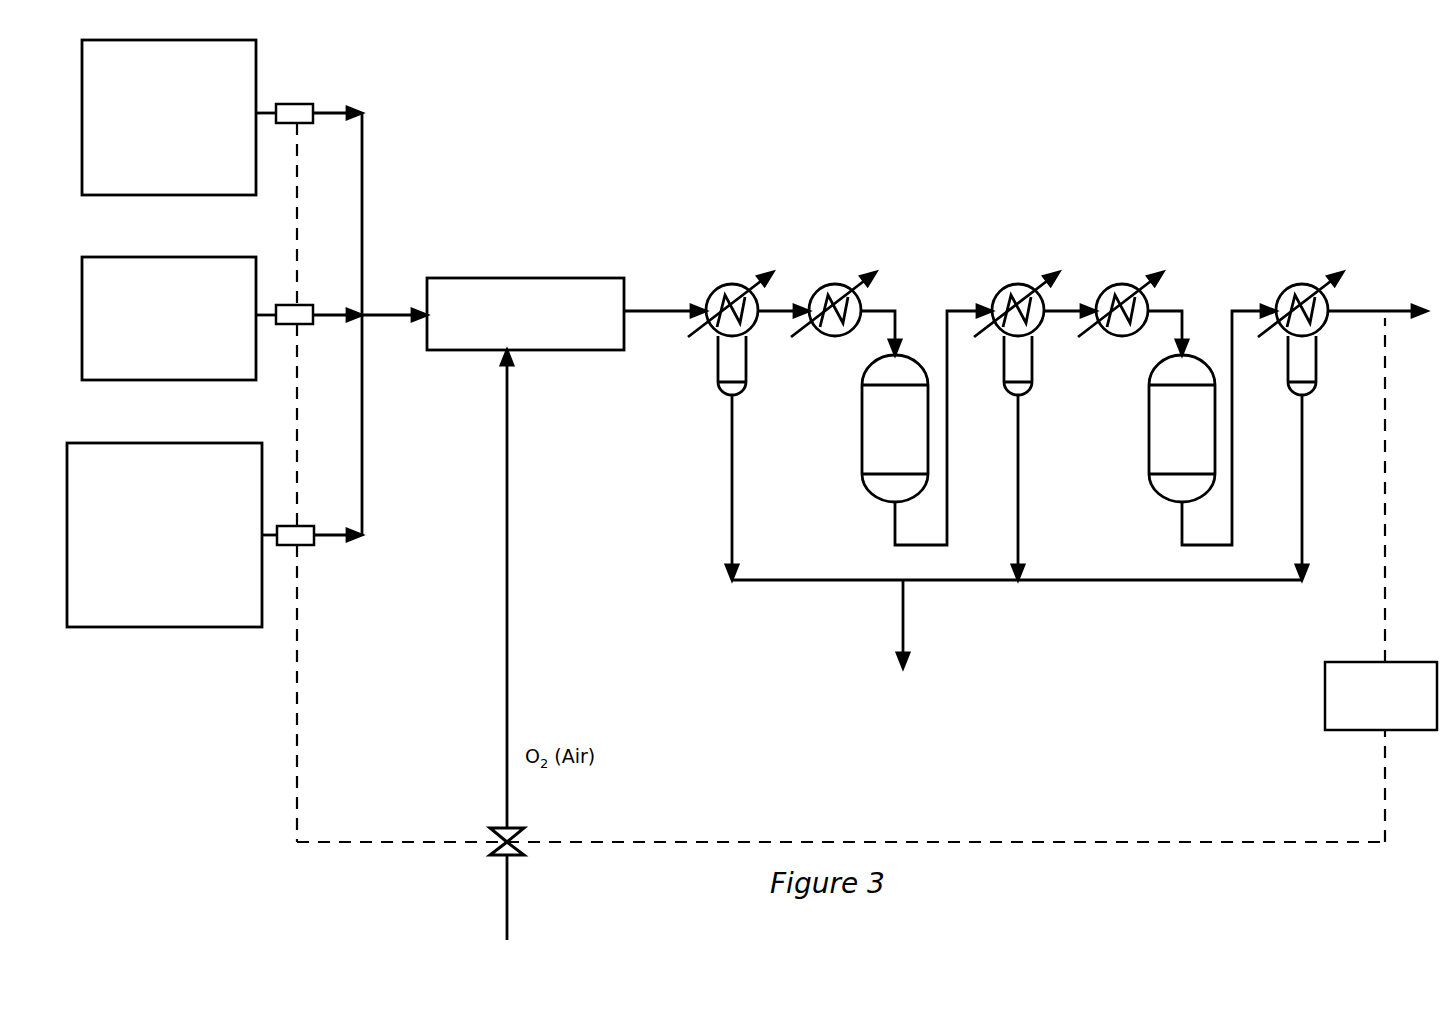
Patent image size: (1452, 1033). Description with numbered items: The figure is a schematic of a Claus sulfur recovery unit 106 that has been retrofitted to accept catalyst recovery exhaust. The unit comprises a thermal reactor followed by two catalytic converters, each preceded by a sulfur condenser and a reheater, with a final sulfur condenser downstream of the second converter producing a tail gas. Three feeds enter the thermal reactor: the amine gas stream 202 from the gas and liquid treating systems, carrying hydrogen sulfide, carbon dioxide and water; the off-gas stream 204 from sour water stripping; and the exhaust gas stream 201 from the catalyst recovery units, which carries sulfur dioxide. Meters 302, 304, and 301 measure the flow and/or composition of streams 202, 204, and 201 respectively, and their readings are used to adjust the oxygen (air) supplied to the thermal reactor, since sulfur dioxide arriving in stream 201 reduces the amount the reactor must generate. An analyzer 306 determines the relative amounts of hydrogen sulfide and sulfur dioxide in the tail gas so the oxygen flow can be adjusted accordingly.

The sulfur recovery unit 106 is at (668, 118).
The exhaust gas stream 201 is at (164, 535).
The amine gas stream 202 is at (169, 117).
The sour water stripping off-gas stream 204 is at (169, 318).
The meter 301 is at (298, 530).
The meter 302 is at (298, 103).
The meter 304 is at (298, 311).
The analyzer 306 is at (1340, 662).